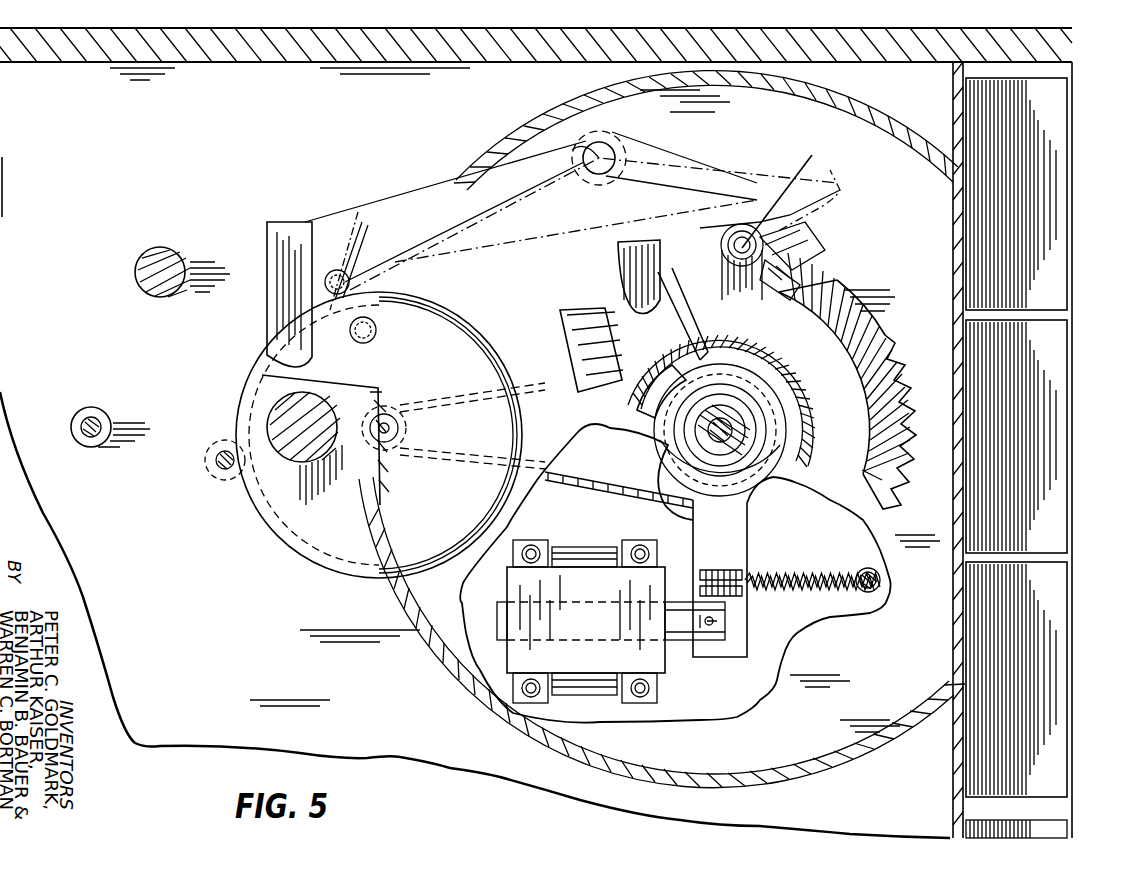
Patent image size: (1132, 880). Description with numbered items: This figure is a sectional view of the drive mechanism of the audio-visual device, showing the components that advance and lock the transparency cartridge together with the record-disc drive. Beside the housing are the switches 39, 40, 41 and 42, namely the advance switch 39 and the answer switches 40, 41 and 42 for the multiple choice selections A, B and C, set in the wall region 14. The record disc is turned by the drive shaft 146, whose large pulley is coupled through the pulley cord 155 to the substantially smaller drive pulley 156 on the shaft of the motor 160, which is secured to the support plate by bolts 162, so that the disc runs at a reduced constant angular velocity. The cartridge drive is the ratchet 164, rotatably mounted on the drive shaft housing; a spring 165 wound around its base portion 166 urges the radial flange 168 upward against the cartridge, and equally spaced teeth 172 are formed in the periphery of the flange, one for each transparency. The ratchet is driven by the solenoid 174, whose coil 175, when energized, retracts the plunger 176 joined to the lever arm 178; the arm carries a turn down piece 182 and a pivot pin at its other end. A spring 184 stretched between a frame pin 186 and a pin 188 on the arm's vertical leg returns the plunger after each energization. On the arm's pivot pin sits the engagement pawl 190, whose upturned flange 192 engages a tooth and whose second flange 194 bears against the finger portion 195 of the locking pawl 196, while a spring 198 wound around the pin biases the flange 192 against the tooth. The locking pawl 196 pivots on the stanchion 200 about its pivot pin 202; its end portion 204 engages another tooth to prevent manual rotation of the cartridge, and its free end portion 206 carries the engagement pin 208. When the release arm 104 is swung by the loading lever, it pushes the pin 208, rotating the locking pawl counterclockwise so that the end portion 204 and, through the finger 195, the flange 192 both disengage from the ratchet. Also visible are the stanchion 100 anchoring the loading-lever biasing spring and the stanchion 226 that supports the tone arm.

The housing wall 14 is at (1072, 312).
The advance switch 39 is at (1052, 829).
The answer switch 40 is at (1057, 722).
The answer switch 41 is at (1057, 492).
The answer switch 42 is at (1057, 160).
The stanchion 100 is at (91, 420).
The release arm 104 is at (308, 216).
The drive shaft 146 is at (712, 440).
The pulley cord 155 is at (580, 490).
The drive pulley 156 is at (395, 428).
The motor 160 is at (488, 356).
The bolts 162 is at (216, 461).
The ratchet 164 is at (558, 324).
The spring 165 is at (658, 424).
The base portion 166 is at (755, 418).
The radial flange 168 is at (875, 470).
The teeth 172 is at (880, 340).
The solenoid 174 is at (572, 568).
The coil 175 is at (602, 700).
The plunger 176 is at (682, 642).
The lever arm 178 is at (760, 530).
The turn down piece 182 is at (721, 392).
The spring 184 is at (815, 578).
The pin 186 is at (876, 592).
The pin 188 is at (732, 590).
The engagement pawl 190 is at (788, 274).
The upturned flange portion 192 is at (770, 197).
The second upturned flange portion 194 is at (666, 315).
The finger portion 195 is at (625, 287).
The locking pawl 196 is at (735, 172).
The spring 198 is at (733, 275).
The stanchion 200 is at (622, 146).
The pivot pin 202 is at (582, 160).
The end portion 204 is at (820, 238).
The free end portion 206 is at (368, 218).
The engagement pin 208 is at (337, 270).
The stanchion 226 is at (140, 268).